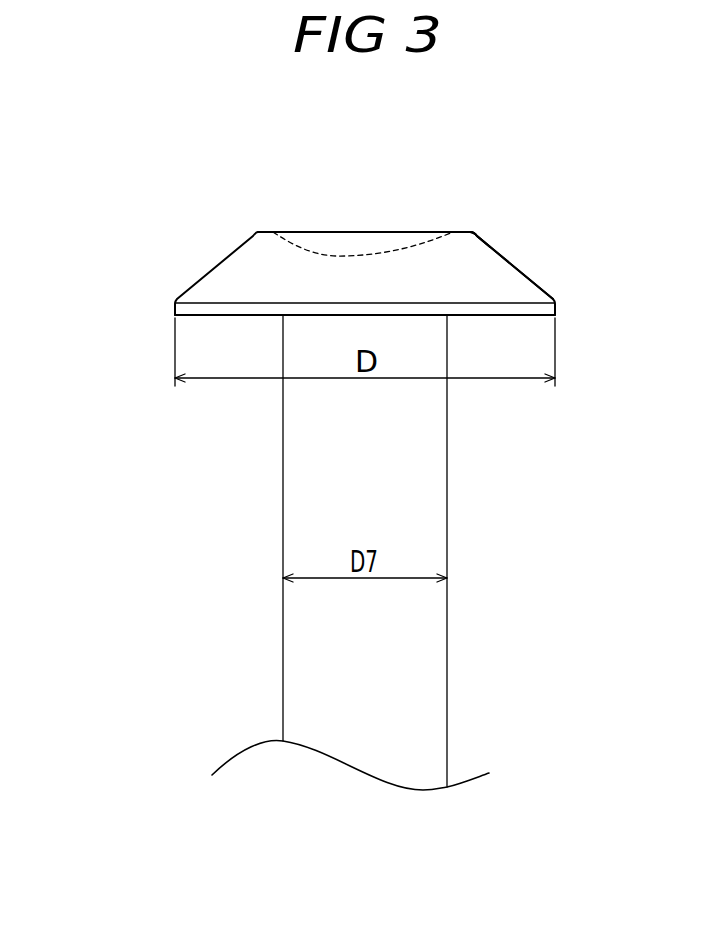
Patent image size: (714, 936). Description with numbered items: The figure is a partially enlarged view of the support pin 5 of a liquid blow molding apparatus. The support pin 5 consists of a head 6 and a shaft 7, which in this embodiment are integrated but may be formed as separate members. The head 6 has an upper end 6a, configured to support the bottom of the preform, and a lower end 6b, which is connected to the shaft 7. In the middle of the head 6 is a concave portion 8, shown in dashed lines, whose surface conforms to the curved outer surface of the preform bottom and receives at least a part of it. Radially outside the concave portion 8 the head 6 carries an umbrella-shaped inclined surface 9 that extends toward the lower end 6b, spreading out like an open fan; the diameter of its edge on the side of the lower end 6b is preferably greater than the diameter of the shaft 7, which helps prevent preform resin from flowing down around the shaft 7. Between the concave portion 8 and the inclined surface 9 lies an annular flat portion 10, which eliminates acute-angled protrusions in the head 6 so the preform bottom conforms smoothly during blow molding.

The support pin 5 is at (143, 278).
The head 6 is at (488, 243).
The upper end 6a is at (258, 232).
The lower end 6b is at (175, 307).
The shaft 7 is at (447, 480).
The concave portion 8 is at (342, 255).
The inclined surface 9 is at (510, 262).
The annular flat portion 10 is at (462, 232).